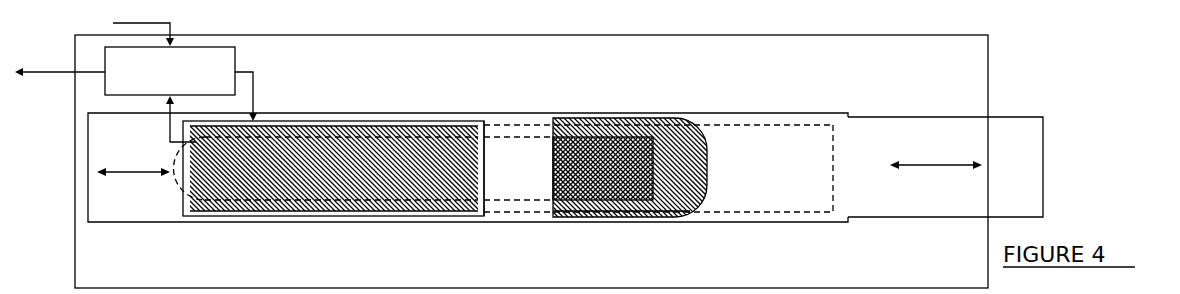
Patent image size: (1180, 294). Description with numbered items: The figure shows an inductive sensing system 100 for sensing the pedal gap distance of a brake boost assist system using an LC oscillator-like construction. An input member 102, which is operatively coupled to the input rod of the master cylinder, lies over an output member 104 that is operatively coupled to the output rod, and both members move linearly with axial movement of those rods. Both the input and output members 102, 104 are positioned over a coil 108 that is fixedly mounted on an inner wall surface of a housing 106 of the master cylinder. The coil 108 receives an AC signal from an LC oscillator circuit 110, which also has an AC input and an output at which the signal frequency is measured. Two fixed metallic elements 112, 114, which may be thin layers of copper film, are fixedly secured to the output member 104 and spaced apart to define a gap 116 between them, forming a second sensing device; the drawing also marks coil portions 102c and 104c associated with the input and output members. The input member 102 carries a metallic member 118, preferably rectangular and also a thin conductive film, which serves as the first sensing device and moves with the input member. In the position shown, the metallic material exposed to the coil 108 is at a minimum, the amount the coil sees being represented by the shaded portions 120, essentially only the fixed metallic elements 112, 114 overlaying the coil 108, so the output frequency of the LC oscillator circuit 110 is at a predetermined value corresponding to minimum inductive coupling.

The system 100 is at (1055, 73).
The input member 102 is at (1020, 155).
The input member coil 102c is at (578, 128).
The output member 104 is at (110, 212).
The output member coil 104c is at (492, 120).
The housing 106 is at (948, 83).
The coil 108 is at (297, 130).
The LC oscillator circuit 110 is at (218, 72).
The fixed metallic element 112 is at (833, 170).
The fixed metallic element 114 is at (182, 204).
The gap 116 is at (550, 110).
The metallic member 118 is at (640, 153).
The shaded portions 120 is at (388, 203).